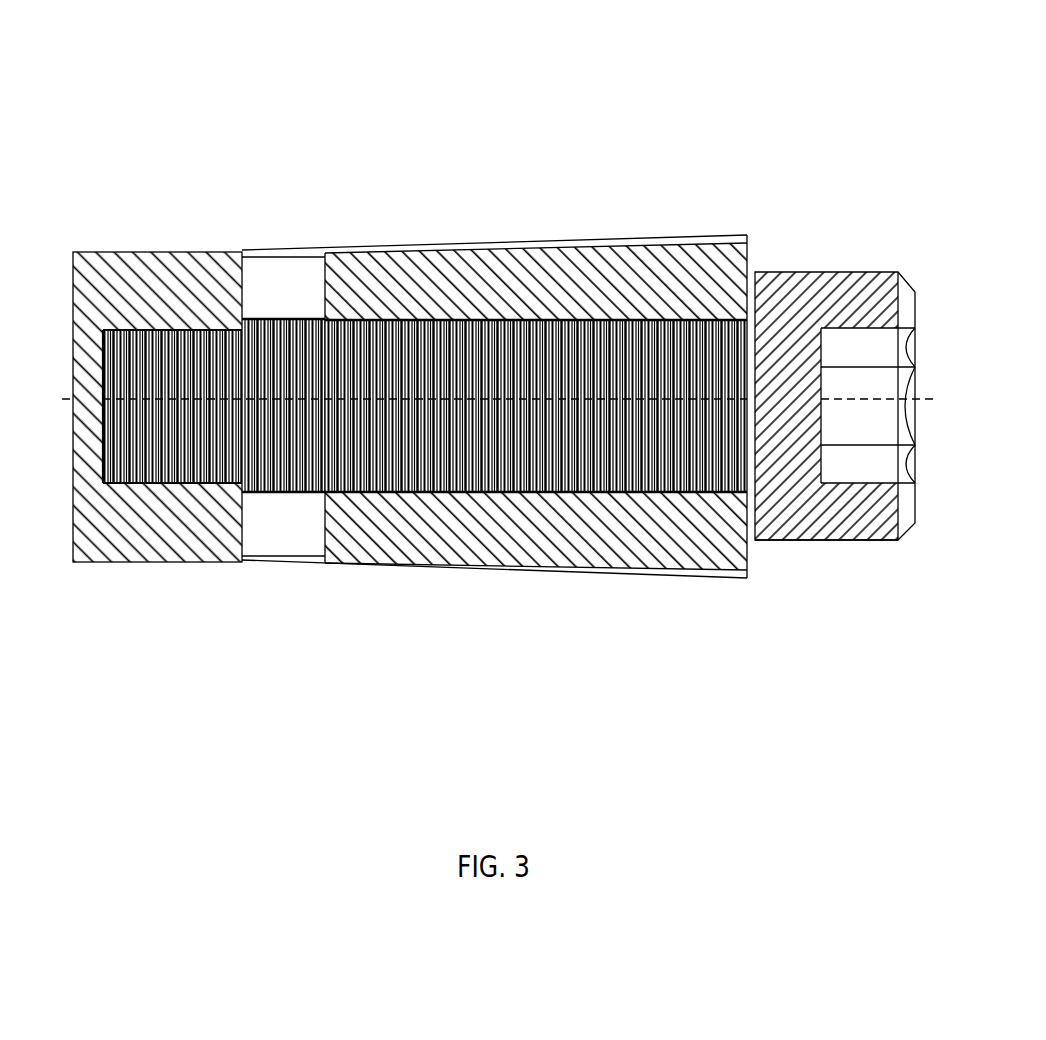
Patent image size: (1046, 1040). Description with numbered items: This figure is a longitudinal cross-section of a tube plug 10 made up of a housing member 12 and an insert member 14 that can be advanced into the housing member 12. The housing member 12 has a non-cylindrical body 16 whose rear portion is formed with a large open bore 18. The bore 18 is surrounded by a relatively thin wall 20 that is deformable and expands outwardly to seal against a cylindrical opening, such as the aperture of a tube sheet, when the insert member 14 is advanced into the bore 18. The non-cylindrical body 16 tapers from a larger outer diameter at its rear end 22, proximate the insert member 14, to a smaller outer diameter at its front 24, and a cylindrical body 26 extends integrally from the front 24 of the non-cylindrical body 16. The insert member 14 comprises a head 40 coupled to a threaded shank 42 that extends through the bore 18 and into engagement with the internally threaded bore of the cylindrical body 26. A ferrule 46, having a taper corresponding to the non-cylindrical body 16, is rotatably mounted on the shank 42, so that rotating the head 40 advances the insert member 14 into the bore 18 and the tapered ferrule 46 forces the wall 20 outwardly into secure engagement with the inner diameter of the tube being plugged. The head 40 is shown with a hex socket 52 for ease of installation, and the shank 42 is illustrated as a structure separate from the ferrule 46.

The tube plug 10 is at (484, 94).
The housing member 12 is at (408, 204).
The insert member 14 is at (773, 241).
The non-cylindrical body 16 is at (360, 567).
The bore 18 is at (284, 275).
The wall 20 is at (455, 243).
The rear end 22 is at (712, 582).
The front 24 is at (252, 562).
The cylindrical body 26 is at (93, 562).
The head 40 is at (798, 542).
The threaded shank 42 is at (618, 487).
The ferrule 46 is at (548, 248).
The hex socket 52 is at (924, 352).